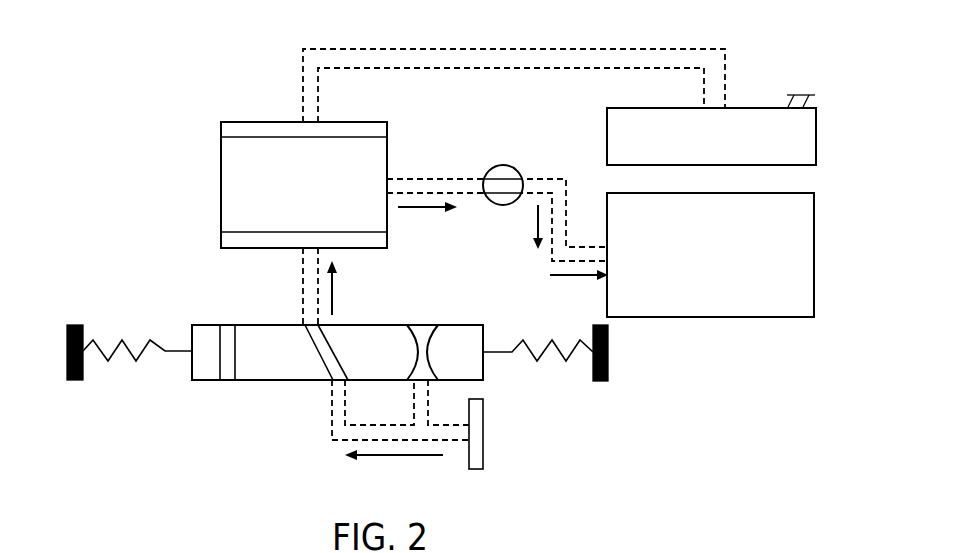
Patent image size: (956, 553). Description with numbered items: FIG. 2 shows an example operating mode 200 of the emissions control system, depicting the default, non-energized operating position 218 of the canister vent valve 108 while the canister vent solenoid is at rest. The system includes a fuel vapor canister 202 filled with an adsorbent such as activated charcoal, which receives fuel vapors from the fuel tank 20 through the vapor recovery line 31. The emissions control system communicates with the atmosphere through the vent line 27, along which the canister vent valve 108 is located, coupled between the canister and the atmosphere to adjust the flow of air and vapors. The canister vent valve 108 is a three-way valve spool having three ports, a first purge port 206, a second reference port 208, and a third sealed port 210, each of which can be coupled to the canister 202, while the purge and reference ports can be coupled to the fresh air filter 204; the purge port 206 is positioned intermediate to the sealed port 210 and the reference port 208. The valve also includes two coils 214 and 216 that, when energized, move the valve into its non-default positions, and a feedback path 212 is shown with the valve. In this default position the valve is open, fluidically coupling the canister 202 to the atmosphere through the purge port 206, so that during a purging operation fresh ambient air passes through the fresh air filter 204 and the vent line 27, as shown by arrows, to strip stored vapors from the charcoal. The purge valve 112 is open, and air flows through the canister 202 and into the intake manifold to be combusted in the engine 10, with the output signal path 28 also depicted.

The operating mode 200 is at (144, 70).
The fuel vapor canister 202 is at (304, 185).
The fuel tank 20 is at (711, 130).
The engine 10 is at (710, 255).
The vapor recovery line 31 is at (448, 49).
The output signal path 28 is at (407, 178).
The purge valve 112 is at (502, 165).
The vent line 27 is at (303, 278).
The default, non-energized operating position 218 is at (337, 344).
The canister vent valve 108 is at (337, 352).
The sealed port 210 is at (232, 381).
The purge port 206 is at (328, 360).
The reference port 208 is at (421, 308).
The coil 216 is at (75, 381).
The coil 214 is at (601, 381).
The feedback path 212 is at (428, 397).
The fresh air filter 204 is at (474, 469).